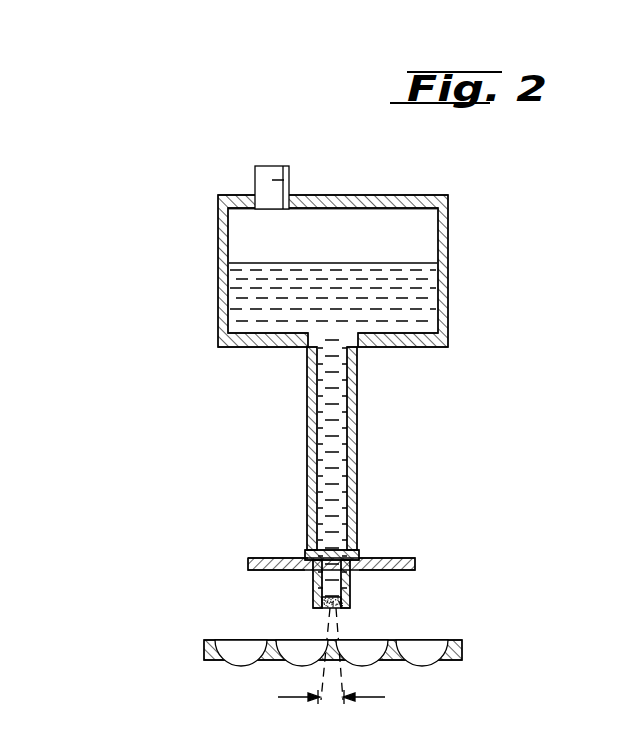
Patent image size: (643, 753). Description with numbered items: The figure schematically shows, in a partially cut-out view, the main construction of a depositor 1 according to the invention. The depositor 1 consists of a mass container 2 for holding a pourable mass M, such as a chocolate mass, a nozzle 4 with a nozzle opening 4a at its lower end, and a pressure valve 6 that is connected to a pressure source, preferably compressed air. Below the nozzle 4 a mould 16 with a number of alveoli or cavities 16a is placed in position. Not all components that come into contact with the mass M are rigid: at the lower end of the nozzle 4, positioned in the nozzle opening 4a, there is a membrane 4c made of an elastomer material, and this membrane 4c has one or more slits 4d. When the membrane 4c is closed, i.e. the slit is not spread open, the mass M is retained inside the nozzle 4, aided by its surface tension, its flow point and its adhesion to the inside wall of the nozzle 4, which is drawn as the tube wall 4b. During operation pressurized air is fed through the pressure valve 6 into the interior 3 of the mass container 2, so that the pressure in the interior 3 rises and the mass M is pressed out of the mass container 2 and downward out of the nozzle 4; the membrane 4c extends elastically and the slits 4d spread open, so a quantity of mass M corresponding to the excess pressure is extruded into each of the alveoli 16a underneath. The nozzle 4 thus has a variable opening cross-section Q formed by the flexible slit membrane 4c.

The depositor 1 is at (537, 286).
The mass container 2 is at (215, 250).
The interior of the mass container 3 is at (430, 240).
The pourable mass M is at (245, 302).
The pressure valve 6 is at (287, 181).
The nozzle 4 is at (306, 481).
The tube wall 4b is at (358, 437).
The membrane 4c is at (346, 591).
The slits 4d is at (340, 610).
The nozzle opening 4a is at (325, 613).
The mould 16 is at (460, 661).
The alveoli 16a is at (430, 650).
The opening cross-section Q is at (331, 713).